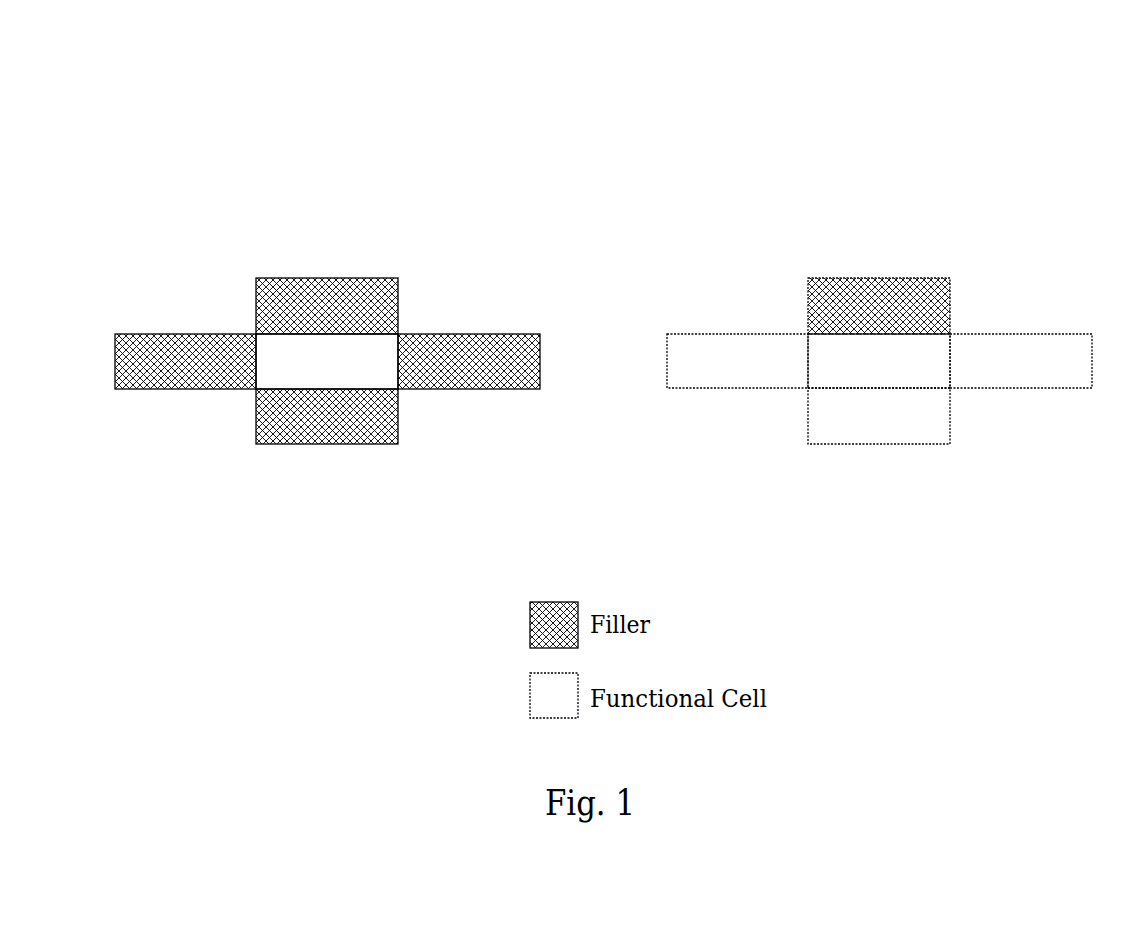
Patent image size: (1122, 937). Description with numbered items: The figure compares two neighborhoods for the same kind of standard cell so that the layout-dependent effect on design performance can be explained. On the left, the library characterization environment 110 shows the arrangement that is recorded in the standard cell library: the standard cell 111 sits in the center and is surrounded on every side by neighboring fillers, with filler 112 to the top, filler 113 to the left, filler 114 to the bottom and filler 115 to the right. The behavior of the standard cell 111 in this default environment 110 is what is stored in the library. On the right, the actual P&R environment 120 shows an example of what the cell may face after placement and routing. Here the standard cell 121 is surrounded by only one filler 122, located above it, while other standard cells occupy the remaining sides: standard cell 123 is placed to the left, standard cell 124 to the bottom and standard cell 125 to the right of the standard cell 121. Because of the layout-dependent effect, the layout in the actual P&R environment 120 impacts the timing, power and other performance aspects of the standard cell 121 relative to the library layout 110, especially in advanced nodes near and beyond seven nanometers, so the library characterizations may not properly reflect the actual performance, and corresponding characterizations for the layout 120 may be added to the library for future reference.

The library characterization environment 110 is at (481, 98).
The standard cell 111 is at (388, 372).
The filler 112 is at (300, 287).
The filler 113 is at (162, 338).
The filler 114 is at (265, 445).
The filler 115 is at (445, 338).
The actual P&R environment 120 is at (1034, 100).
The standard cell 121 is at (940, 372).
The filler 122 is at (853, 287).
The standard cell 123 is at (712, 338).
The standard cell 124 is at (820, 445).
The standard cell 125 is at (995, 338).